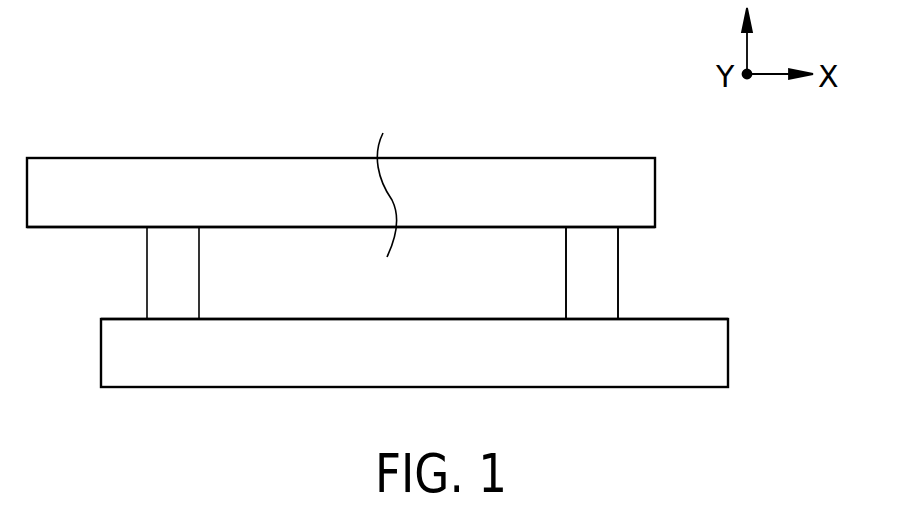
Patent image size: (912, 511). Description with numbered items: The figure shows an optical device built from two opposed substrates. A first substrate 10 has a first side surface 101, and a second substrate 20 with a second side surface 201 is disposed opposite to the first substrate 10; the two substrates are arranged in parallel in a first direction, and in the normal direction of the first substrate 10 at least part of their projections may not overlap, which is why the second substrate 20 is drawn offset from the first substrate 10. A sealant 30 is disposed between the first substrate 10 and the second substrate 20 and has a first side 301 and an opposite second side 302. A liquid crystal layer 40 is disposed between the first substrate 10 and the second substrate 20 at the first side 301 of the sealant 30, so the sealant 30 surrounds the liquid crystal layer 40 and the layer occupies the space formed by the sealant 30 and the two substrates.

The first substrate 10 is at (713, 338).
The first side surface 101 is at (728, 368).
The second substrate 20 is at (643, 169).
The second side surface 201 is at (655, 202).
The sealant 30 is at (605, 285).
The first side 301 is at (566, 290).
The second side 302 is at (618, 249).
The liquid crystal layer 40 is at (386, 179).